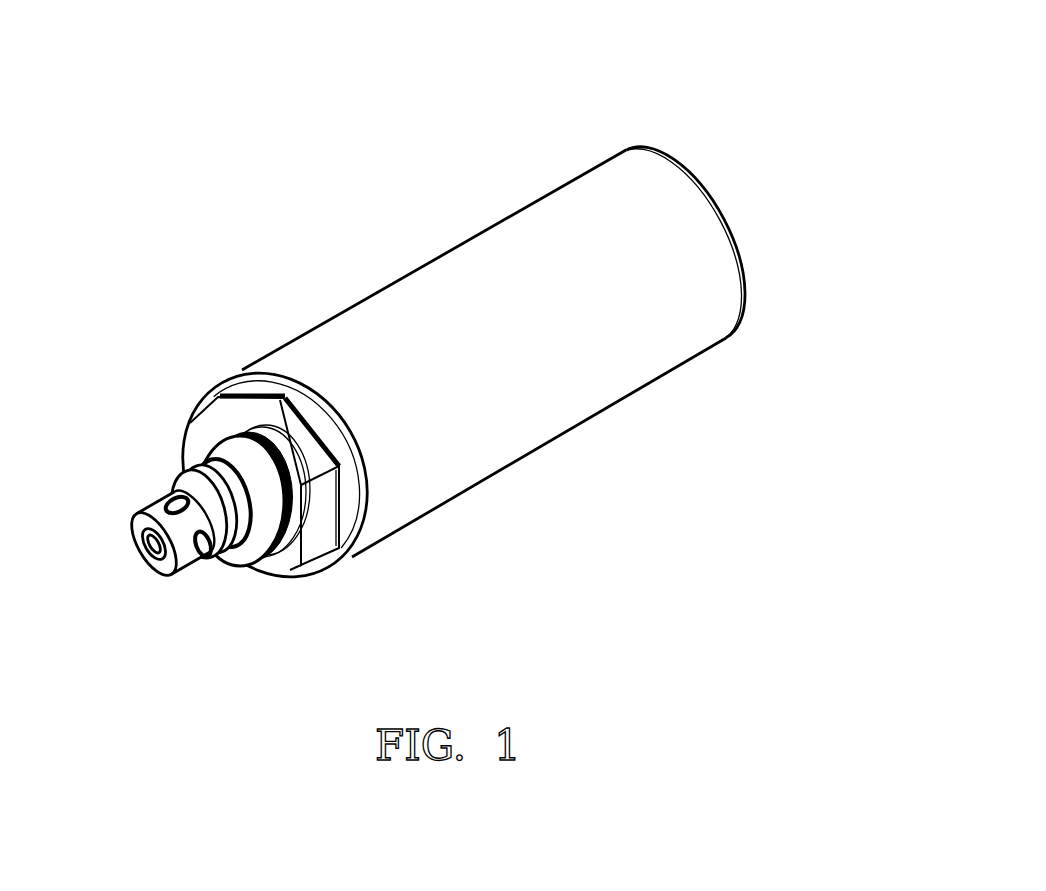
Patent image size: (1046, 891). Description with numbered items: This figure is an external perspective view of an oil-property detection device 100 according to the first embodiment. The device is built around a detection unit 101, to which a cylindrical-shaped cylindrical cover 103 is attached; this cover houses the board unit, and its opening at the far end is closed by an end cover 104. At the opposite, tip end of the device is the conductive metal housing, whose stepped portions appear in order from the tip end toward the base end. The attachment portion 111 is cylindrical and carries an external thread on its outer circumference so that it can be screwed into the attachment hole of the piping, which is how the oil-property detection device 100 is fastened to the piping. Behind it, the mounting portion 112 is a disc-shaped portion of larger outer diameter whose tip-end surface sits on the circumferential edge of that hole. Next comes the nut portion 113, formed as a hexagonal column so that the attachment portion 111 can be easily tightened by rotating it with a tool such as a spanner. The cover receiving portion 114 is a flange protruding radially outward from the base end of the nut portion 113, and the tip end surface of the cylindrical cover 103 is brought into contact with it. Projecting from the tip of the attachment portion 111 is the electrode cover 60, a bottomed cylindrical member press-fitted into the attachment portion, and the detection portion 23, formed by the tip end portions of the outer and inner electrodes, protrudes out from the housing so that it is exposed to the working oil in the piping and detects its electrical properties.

The oil-property detection device 100 is at (459, 315).
The detection unit 101 is at (186, 475).
The cylindrical cover 103 is at (433, 272).
The end cover 104 is at (710, 192).
The attachment portion 111 is at (232, 542).
The mounting portion 112 is at (273, 542).
The nut portion 113 is at (213, 412).
The cover receiving portion 114 is at (271, 362).
The electrode cover 60 is at (162, 570).
The detection portion 23 is at (130, 557).